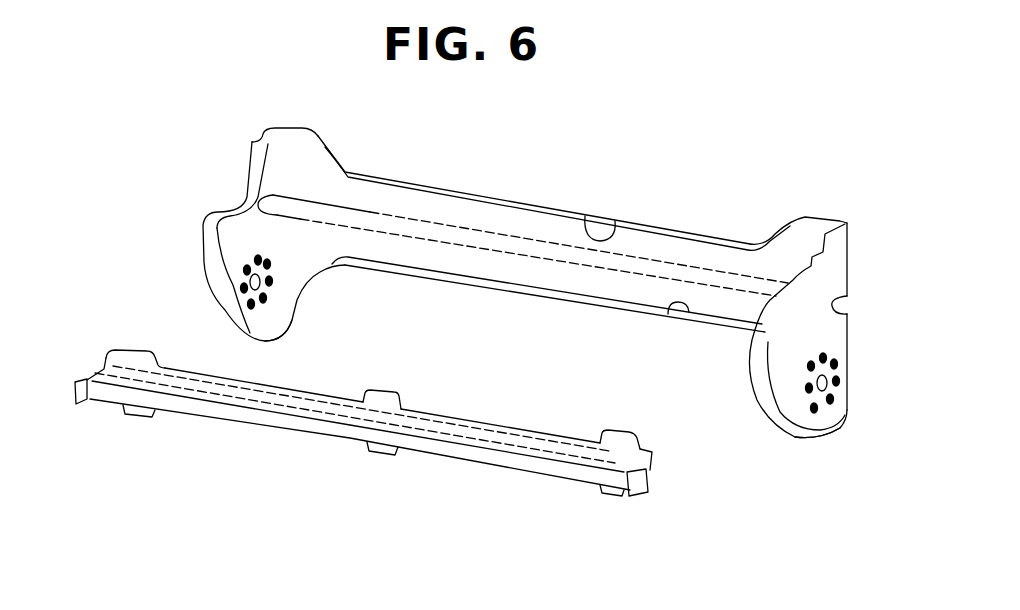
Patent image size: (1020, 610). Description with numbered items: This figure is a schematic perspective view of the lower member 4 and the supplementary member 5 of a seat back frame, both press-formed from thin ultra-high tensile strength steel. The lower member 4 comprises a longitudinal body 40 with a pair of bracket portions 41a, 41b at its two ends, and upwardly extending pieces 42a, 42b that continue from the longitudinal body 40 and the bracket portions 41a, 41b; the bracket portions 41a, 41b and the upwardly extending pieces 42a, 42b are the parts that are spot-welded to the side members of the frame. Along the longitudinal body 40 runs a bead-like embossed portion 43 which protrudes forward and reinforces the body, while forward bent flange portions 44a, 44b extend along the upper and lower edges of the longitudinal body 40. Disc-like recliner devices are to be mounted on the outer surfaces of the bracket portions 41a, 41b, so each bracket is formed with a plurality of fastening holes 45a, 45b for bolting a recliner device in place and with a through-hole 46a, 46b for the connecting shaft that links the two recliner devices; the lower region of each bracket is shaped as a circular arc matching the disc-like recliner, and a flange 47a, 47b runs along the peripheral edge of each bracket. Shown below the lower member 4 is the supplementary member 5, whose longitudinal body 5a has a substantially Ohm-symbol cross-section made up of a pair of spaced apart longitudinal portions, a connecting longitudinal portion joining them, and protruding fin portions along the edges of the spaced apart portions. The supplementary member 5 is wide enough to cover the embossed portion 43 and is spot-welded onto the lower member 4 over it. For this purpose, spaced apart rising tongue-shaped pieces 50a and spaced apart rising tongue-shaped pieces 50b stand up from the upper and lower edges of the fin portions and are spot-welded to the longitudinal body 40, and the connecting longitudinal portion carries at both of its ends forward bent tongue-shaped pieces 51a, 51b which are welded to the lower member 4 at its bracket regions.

The lower member 4 is at (485, 185).
The supplementary member 5 is at (247, 433).
The longitudinal body 5a is at (465, 448).
The longitudinal body 40 is at (594, 278).
The bracket portion 41a is at (827, 333).
The bracket portion 41b is at (247, 243).
The upwardly extending piece 42a is at (818, 230).
The upwardly extending piece 42b is at (296, 152).
The bead-like embossed portion 43 is at (500, 246).
The forward bent flange portion 44a is at (588, 213).
The forward bent flange portion 44b is at (670, 315).
The fastening holes 45a is at (836, 365).
The fastening holes 45b is at (269, 264).
The through-hole 46a is at (840, 405).
The through-hole 46b is at (282, 243).
The flange 47a is at (765, 382).
The flange 47b is at (226, 297).
The rising tongue-shaped pieces 50a is at (137, 356).
The rising tongue-shaped pieces 50b is at (122, 410).
The forward bent tongue-shaped piece 51a is at (644, 486).
The forward bent tongue-shaped piece 51b is at (88, 396).